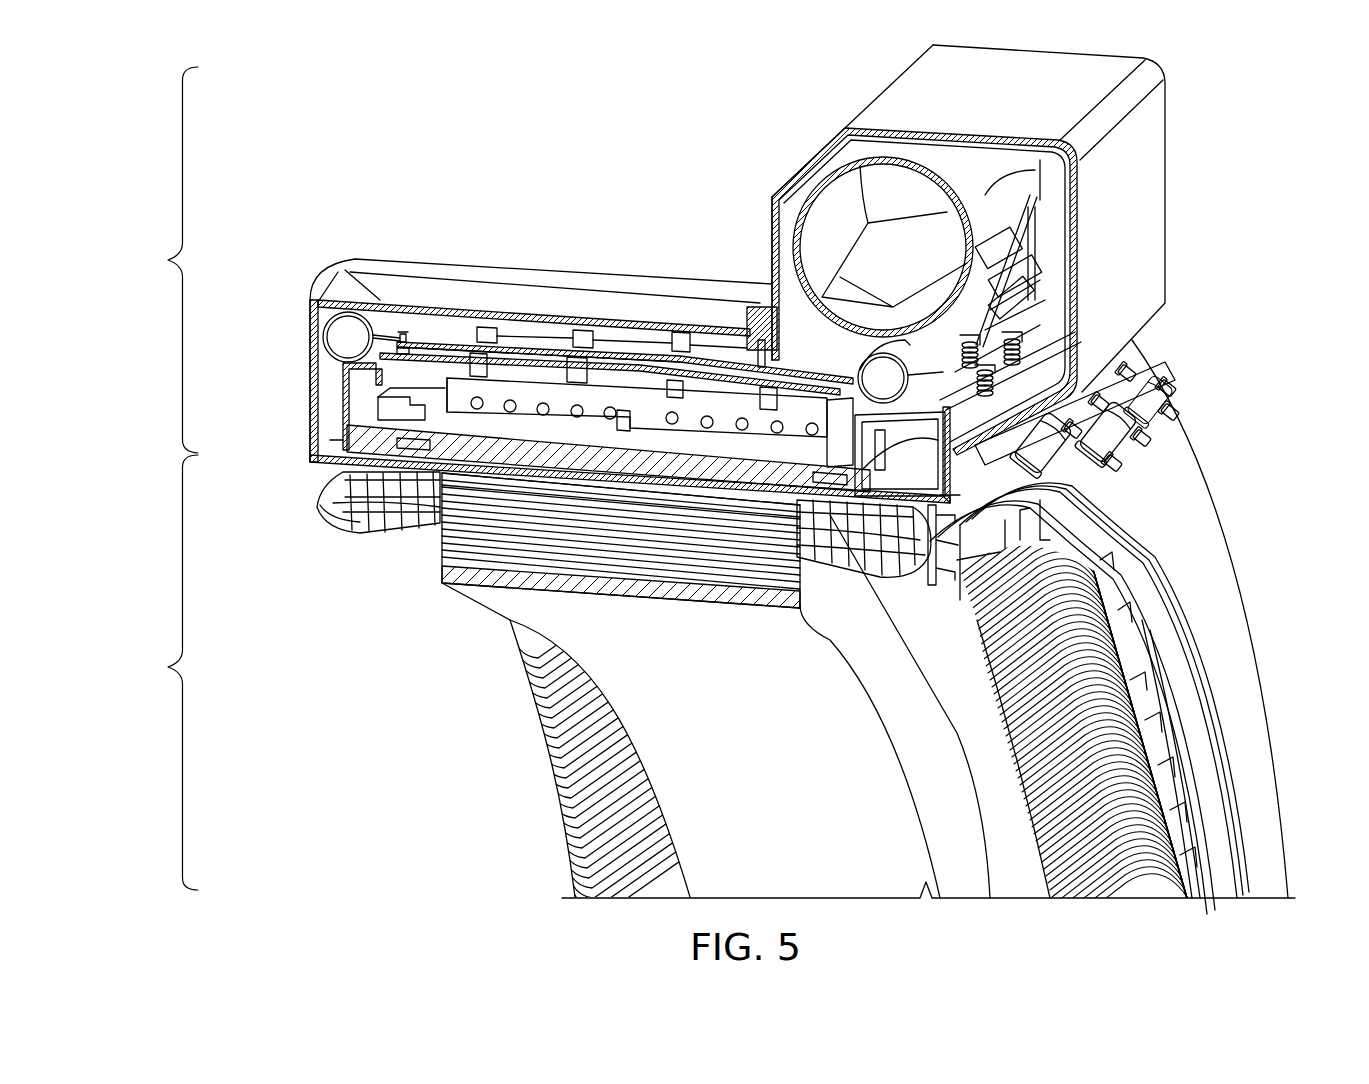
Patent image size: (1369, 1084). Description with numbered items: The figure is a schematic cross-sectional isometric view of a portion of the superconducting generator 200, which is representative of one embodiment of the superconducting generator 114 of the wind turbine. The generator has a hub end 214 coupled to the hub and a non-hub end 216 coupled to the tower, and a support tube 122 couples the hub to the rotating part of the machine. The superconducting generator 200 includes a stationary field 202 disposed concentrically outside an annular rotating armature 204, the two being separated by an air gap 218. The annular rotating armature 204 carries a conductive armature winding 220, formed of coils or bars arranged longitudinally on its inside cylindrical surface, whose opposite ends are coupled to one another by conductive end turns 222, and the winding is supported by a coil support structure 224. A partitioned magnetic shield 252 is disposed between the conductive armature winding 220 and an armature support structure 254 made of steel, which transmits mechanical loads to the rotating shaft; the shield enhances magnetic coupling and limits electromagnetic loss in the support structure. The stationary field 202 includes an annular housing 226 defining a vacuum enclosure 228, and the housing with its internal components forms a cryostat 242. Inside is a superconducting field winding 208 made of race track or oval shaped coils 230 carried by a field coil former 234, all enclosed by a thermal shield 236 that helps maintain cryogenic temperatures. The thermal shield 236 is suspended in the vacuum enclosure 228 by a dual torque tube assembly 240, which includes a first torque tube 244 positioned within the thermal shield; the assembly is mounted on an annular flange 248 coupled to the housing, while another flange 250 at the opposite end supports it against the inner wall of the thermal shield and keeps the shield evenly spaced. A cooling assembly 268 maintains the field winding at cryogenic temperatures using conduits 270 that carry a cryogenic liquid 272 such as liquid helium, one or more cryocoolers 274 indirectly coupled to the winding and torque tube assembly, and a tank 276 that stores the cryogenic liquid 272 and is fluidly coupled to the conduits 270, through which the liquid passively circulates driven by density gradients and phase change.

The superconducting generator 200 is at (460, 130).
The stationary field 202 is at (168, 260).
The annular rotating armature 204 is at (168, 667).
The superconducting generator 114 is at (440, 310).
The support tube 122 is at (398, 330).
The superconducting field winding 208 is at (350, 428).
The hub end 214 is at (300, 328).
The non-hub end 216 is at (1210, 410).
The air gap 218 is at (330, 481).
The conductive armature winding 220 is at (388, 528).
The conductive end turns 222 is at (330, 520).
The coil support structure 224 is at (470, 508).
The annular housing 226 is at (468, 272).
The vacuum enclosure 228 is at (343, 380).
The field coils 230 is at (330, 440).
The field coil former 234 is at (605, 420).
The thermal shield 236 is at (680, 340).
The torque tube assembly 240 is at (728, 345).
The cryostat 242 is at (355, 252).
The first torque tube 244 is at (725, 440).
The annular flange 248 is at (760, 330).
The flange 250 is at (345, 312).
The partitioned magnetic shield 252 is at (462, 580).
The armature support structure 254 is at (763, 590).
The cooling assembly 268 is at (1195, 183).
The conduits 270 is at (892, 560).
The cryogenic liquid 272 is at (812, 272).
The cryocoolers 274 is at (1110, 410).
The tank 276 is at (893, 175).